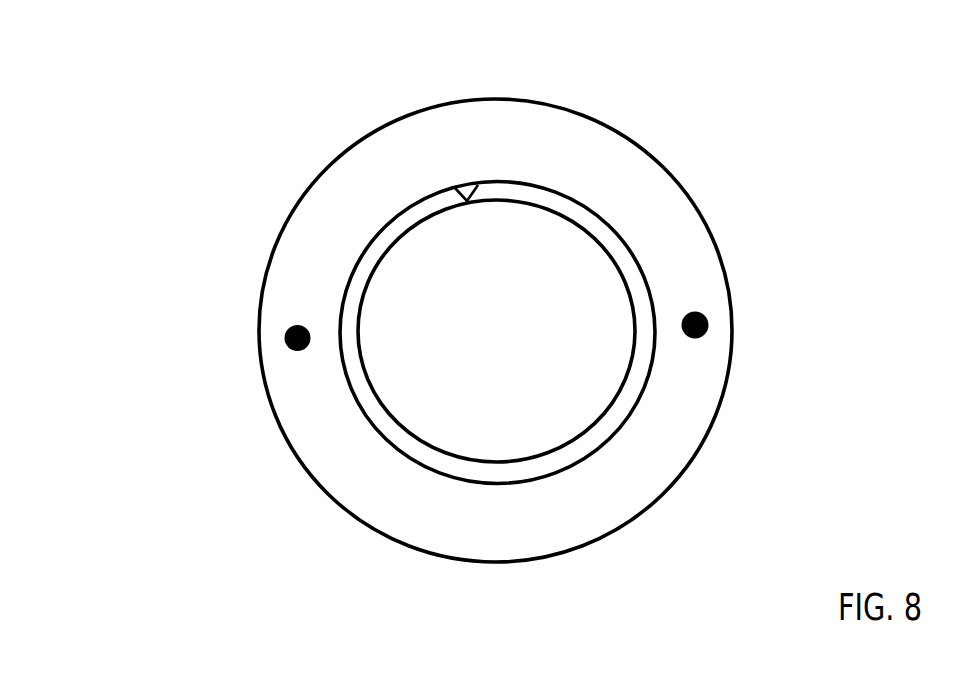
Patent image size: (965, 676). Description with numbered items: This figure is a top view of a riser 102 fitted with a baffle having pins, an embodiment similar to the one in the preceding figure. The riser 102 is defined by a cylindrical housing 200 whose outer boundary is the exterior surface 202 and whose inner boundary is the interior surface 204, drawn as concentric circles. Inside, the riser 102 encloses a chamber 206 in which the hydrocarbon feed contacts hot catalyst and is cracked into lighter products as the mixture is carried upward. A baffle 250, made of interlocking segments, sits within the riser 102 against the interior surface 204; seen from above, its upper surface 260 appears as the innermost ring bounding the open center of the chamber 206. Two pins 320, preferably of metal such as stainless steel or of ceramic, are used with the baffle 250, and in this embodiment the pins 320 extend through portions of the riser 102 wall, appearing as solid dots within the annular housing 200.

The riser 102 is at (658, 197).
The cylindrical housing 200 is at (485, 282).
The exterior surface 202 is at (538, 100).
The interior surface 204 is at (477, 183).
The chamber 206 is at (447, 262).
The baffle 250 is at (367, 267).
The upper surface 260 is at (350, 322).
The pin 320 is at (285, 341).